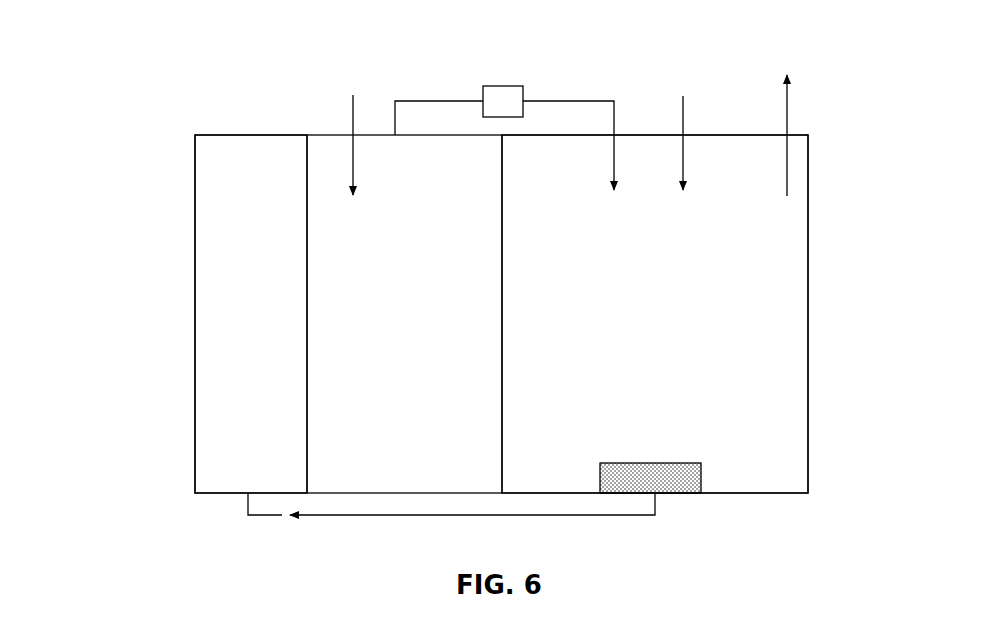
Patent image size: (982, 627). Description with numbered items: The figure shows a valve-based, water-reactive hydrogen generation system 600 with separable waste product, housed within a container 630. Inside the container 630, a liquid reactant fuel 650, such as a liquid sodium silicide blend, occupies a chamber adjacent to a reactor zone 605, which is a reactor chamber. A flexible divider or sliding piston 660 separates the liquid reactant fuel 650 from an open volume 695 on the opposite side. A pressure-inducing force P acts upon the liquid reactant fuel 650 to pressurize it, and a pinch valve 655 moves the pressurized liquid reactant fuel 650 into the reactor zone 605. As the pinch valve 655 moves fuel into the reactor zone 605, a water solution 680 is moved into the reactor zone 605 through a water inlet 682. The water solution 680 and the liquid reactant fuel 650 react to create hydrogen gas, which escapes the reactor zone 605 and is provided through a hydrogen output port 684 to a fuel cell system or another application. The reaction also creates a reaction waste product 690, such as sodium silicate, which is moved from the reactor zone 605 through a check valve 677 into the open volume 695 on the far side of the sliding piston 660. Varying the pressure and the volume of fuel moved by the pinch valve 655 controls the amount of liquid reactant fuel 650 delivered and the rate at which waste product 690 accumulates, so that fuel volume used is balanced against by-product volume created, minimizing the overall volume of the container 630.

The hydrogen generation system 600 is at (140, 48).
The container 630 is at (194, 133).
The sliding piston 660 is at (307, 323).
The open volume 695 is at (207, 428).
The liquid reactant fuel 650 is at (427, 373).
The reactor zone 605 is at (695, 373).
The pinch valve 655 is at (503, 100).
The pressure-inducing force P is at (350, 126).
The water solution 680 is at (688, 88).
The water inlet 682 is at (685, 123).
The hydrogen output port 684 is at (790, 120).
The reaction waste product 690 is at (687, 487).
The check valve 677 is at (275, 536).